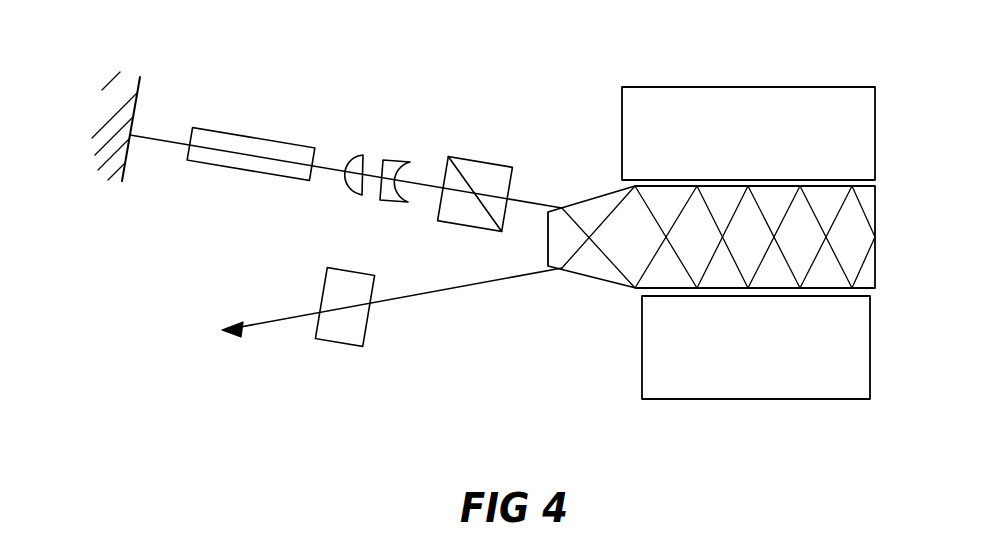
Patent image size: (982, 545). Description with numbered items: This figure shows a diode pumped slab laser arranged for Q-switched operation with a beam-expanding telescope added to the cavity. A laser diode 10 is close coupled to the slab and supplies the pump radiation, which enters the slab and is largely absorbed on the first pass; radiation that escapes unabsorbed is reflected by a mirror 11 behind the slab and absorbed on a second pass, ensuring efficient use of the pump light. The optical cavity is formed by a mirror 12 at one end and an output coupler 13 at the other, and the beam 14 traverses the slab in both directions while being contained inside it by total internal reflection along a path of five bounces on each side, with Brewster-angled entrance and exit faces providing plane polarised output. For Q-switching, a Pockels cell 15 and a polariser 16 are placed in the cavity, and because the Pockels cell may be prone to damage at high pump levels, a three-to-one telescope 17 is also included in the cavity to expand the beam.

The laser diode 10 is at (642, 342).
The mirror 11 is at (733, 86).
The mirror 12 is at (128, 153).
The output coupler 13 is at (377, 317).
The beam 14 is at (537, 203).
The Pockels cell 15 is at (233, 168).
The polariser 16 is at (478, 232).
The telescope 17 is at (366, 206).